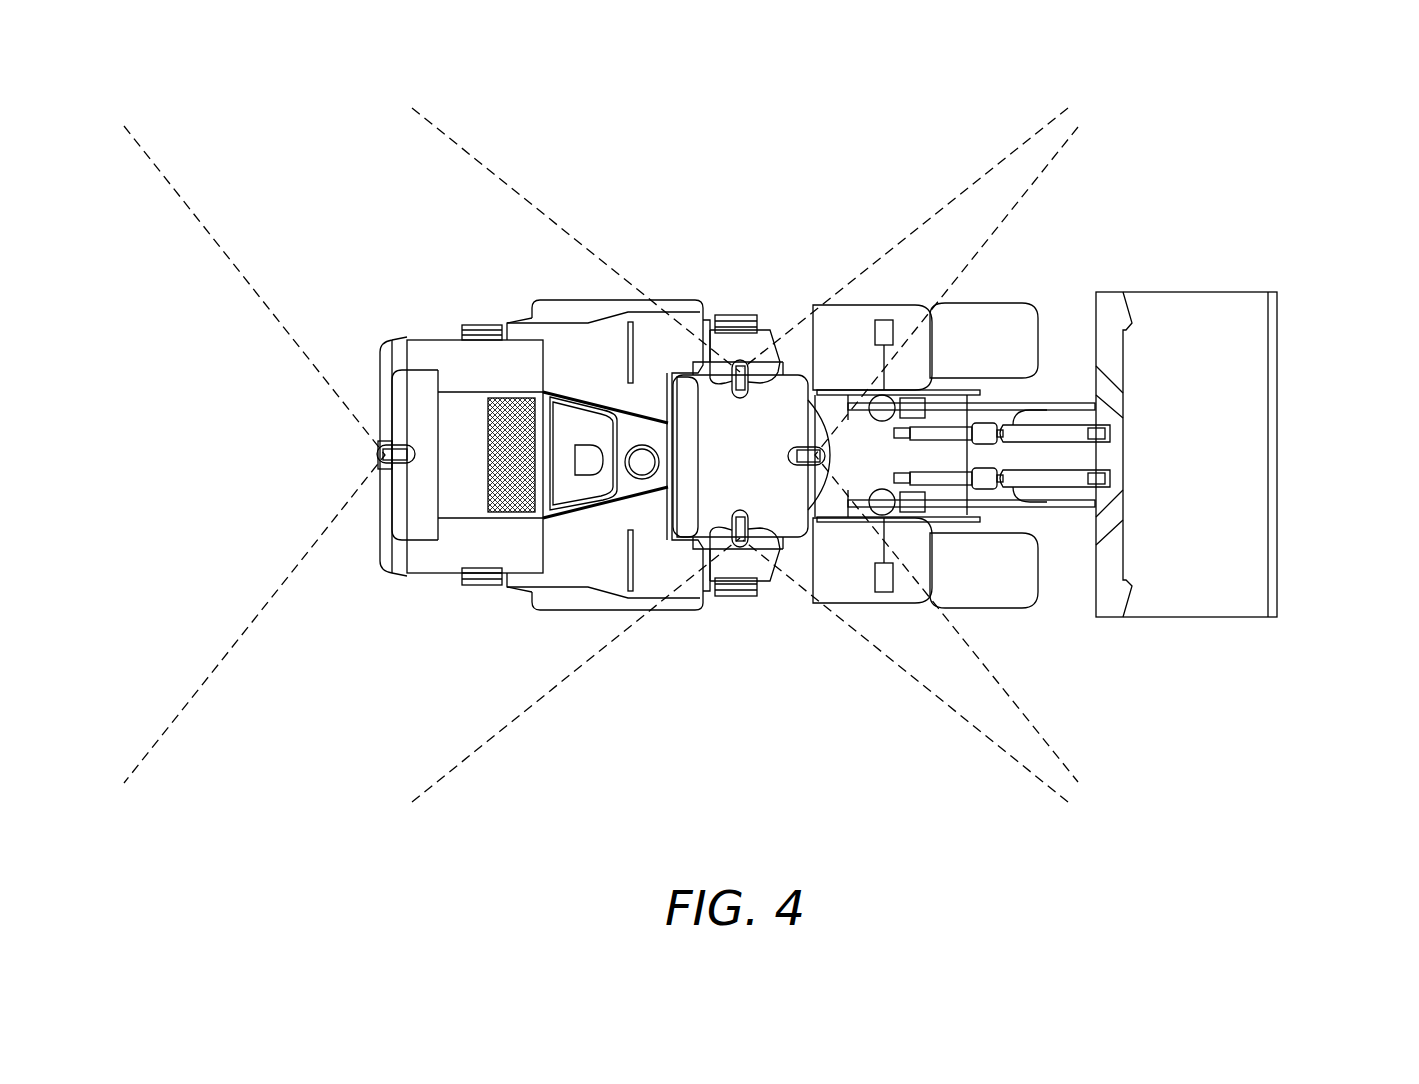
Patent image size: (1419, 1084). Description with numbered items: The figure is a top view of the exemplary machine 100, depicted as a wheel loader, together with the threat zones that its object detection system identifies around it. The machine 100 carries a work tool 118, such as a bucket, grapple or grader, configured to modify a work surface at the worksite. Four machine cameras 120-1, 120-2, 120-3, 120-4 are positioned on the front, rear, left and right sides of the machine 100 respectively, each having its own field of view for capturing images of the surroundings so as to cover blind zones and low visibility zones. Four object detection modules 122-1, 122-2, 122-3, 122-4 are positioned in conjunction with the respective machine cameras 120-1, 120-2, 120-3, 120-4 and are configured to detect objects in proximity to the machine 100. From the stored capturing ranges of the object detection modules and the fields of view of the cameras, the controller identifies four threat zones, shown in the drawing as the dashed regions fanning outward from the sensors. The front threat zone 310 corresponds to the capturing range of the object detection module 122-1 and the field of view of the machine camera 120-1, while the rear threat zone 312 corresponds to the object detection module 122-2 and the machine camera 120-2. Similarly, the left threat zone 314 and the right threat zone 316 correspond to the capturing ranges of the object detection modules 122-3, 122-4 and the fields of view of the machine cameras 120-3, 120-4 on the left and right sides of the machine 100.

The machine 100 is at (1172, 200).
The work tool 118 is at (1290, 398).
The machine camera 120-1 is at (888, 548).
The machine camera 120-2 is at (377, 468).
The machine camera 120-3 is at (749, 360).
The machine camera 120-4 is at (749, 550).
The object detection module 122-1 is at (822, 442).
The object detection module 122-2 is at (378, 450).
The object detection module 122-3 is at (719, 378).
The object detection module 122-4 is at (719, 545).
The front threat zone 310 is at (1060, 157).
The rear threat zone 312 is at (191, 697).
The left threat zone 314 is at (492, 168).
The right threat zone 316 is at (491, 745).